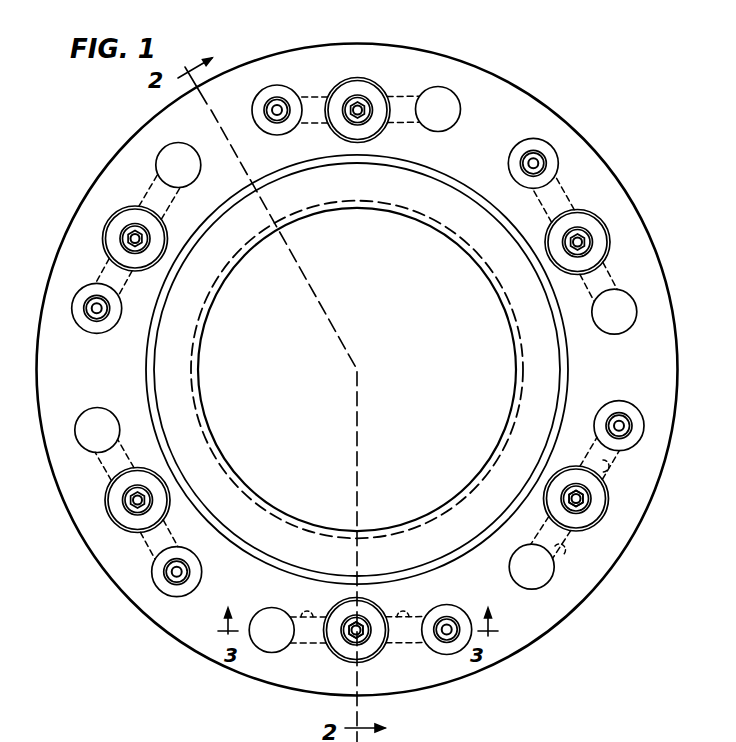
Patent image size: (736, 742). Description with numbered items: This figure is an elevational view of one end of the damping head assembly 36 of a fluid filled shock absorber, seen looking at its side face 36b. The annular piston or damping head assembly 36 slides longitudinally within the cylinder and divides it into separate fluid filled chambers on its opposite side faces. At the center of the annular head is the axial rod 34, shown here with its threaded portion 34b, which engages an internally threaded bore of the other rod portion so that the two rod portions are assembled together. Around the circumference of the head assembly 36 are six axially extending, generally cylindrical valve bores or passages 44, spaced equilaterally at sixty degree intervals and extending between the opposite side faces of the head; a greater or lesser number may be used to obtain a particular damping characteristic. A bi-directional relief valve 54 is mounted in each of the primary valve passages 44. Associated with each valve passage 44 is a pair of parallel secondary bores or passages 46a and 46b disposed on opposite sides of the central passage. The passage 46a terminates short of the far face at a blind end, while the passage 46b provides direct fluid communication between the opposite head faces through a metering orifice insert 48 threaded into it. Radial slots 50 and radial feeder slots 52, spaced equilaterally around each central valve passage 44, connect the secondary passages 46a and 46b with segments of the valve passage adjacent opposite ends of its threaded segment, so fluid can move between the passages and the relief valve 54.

The axial rod 34 is at (421, 403).
The threaded portion 34b is at (489, 265).
The annular piston or damping head assembly 36 is at (677, 330).
The side face 36b is at (603, 182).
The valve bores or passages 44 is at (598, 516).
The secondary bore or passage 46a is at (549, 581).
The secondary bore or passage 46b is at (641, 431).
The metering orifice insert 48 is at (622, 426).
The radial slots 50 is at (611, 463).
The radial feeder slots 52 is at (398, 616).
The bi-directional relief valve 54 is at (586, 497).